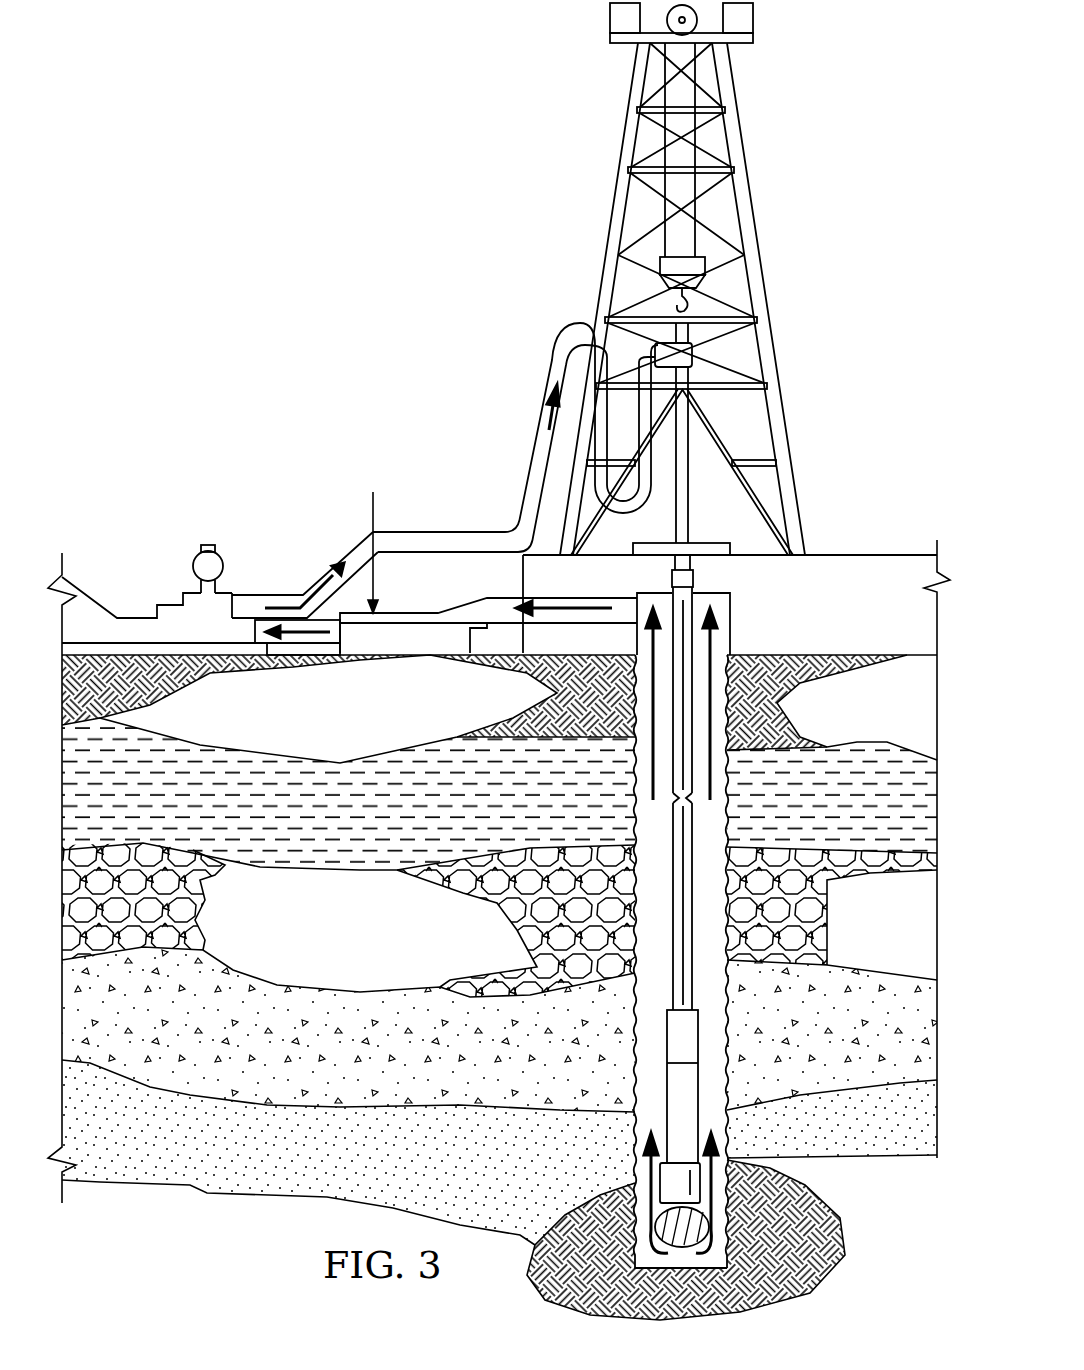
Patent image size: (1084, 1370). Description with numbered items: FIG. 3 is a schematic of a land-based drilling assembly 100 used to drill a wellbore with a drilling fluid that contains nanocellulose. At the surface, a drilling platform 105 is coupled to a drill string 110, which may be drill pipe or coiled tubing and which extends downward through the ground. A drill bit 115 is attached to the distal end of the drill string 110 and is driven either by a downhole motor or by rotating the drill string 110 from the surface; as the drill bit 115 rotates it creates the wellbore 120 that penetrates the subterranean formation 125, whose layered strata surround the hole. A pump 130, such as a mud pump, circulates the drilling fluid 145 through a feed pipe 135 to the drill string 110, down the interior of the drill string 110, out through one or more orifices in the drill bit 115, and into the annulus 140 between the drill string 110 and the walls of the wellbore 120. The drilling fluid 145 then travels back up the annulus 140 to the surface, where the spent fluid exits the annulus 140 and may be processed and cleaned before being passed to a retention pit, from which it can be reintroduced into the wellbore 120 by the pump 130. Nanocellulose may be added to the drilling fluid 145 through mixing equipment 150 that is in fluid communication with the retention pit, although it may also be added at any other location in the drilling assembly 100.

The drilling assembly 100 is at (532, 203).
The drilling platform 105 is at (826, 531).
The drill string 110 is at (712, 578).
The drill bit 115 is at (732, 1210).
The wellbore 120 is at (728, 1040).
The subterranean formation 125 is at (182, 1230).
The pump 130 is at (170, 585).
The feed pipe 135 is at (446, 530).
The annulus 140 is at (717, 910).
The drilling fluid 145 is at (713, 647).
The mixing equipment 150 is at (371, 512).